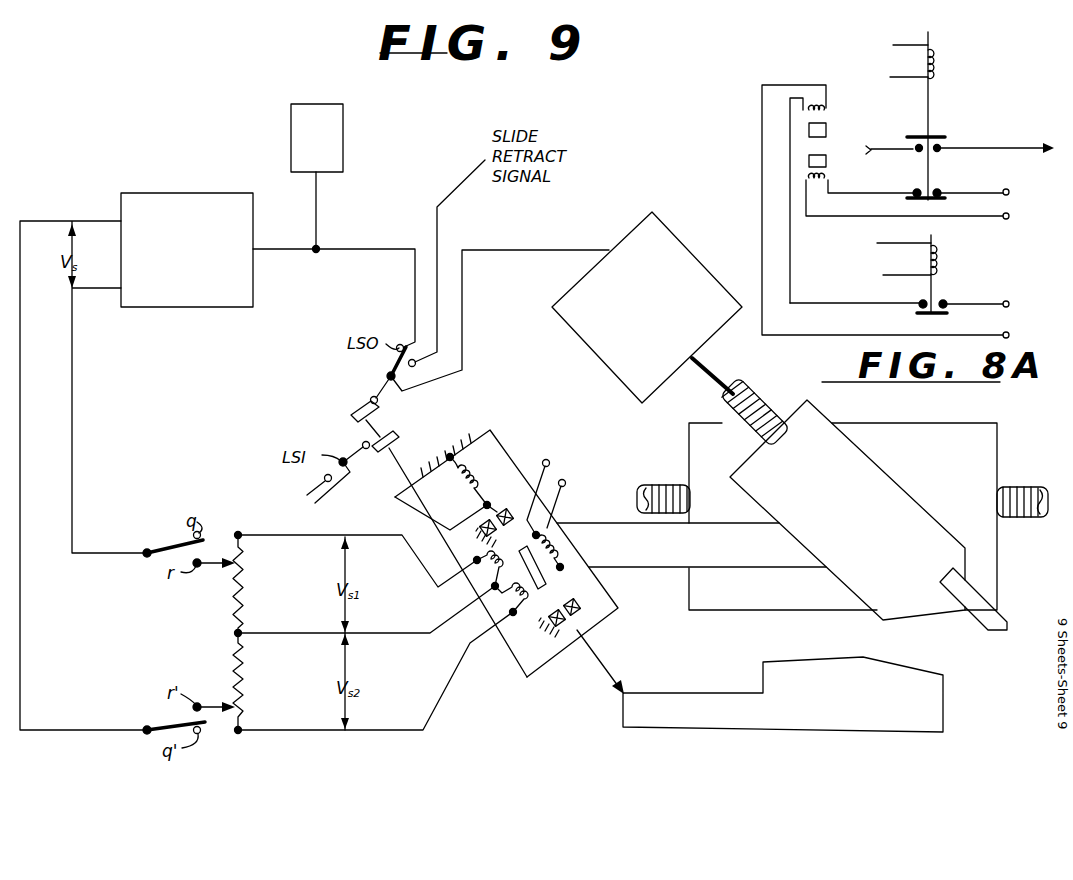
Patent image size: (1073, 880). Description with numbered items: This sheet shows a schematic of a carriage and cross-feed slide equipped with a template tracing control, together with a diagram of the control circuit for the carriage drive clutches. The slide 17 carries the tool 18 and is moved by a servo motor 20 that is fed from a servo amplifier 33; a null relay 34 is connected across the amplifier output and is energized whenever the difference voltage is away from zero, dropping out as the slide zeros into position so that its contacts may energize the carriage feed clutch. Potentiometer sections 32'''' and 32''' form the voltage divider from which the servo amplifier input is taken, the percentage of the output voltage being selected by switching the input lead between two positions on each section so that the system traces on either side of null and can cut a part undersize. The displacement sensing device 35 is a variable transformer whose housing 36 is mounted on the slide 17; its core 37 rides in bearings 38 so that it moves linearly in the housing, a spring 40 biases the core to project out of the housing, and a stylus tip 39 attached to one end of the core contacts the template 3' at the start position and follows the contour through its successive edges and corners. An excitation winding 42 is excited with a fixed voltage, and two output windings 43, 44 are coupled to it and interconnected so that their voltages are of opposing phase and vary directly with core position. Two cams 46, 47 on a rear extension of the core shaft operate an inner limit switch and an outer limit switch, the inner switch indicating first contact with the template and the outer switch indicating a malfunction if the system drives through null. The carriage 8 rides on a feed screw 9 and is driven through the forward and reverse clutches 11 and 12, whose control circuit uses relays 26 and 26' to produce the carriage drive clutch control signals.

In FIG. 9, the servo amplifier 33 is at (200, 193).
In FIG. 9, the null relay 34 is at (343, 135).
In FIG. 9, the servo motor 20 is at (627, 237).
In FIG. 8A, the servo motor 20 is at (995, 133).
In FIG. 9, the cam 47 is at (354, 413).
In FIG. 9, the cam 46 is at (393, 432).
In FIG. 9, the housing 36 is at (493, 472).
In FIG. 9, the spring 40 is at (465, 484).
In FIG. 9, the bearings 38 is at (507, 510).
In FIG. 9, the excitation winding 42 is at (546, 554).
In FIG. 9, the output winding 43 is at (481, 571).
In FIG. 9, the output winding 44 is at (505, 600).
In FIG. 9, the core 37 is at (544, 583).
In FIG. 9, the displacement sensing device 35 is at (519, 686).
In FIG. 9, the stylus tip 39 is at (626, 688).
In FIG. 9, the potentiometer section 32'''' is at (271, 584).
In FIG. 9, the potentiometer section 32''' is at (200, 661).
In FIG. 9, the carriage 8 is at (998, 460).
In FIG. 9, the slide 17 is at (877, 462).
In FIG. 9, the tool 18 is at (1000, 610).
In FIG. 9, the feed screw 9 is at (658, 484).
In FIG. 9, the template 3' is at (783, 709).
In FIG. 8A, the relay 26 is at (949, 116).
In FIG. 8A, the relay 26' is at (899, 274).
In FIG. 8A, the forward clutch 11 is at (826, 128).
In FIG. 8A, the reverse clutch 12 is at (826, 160).